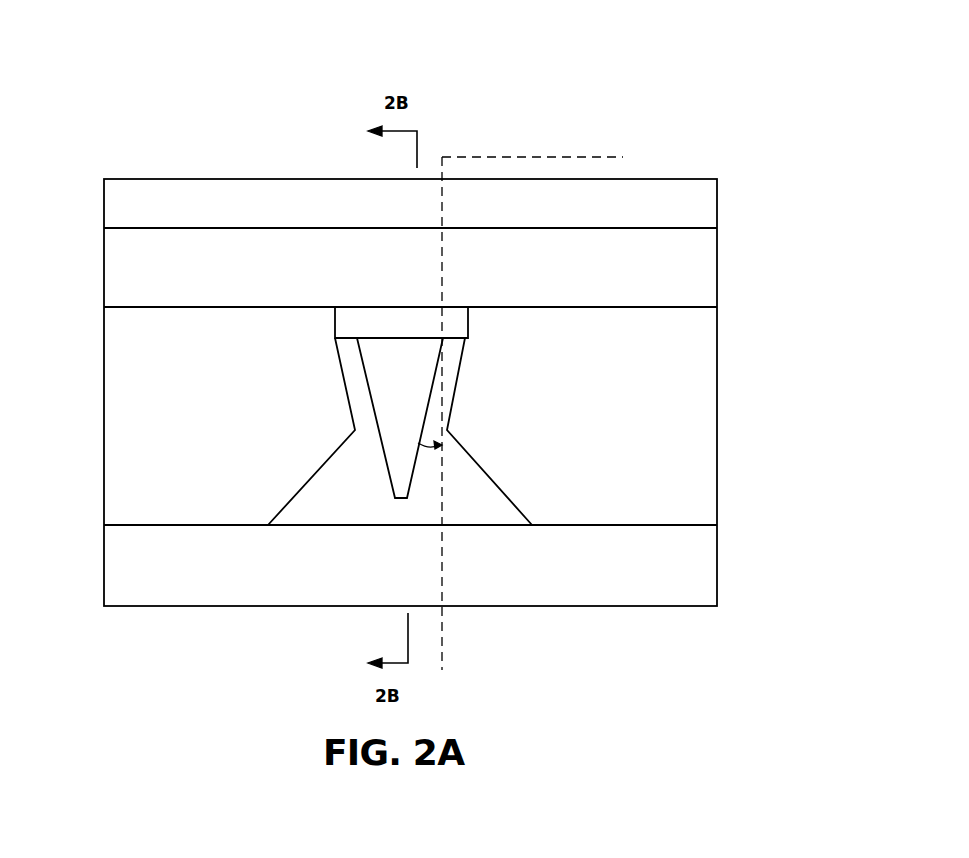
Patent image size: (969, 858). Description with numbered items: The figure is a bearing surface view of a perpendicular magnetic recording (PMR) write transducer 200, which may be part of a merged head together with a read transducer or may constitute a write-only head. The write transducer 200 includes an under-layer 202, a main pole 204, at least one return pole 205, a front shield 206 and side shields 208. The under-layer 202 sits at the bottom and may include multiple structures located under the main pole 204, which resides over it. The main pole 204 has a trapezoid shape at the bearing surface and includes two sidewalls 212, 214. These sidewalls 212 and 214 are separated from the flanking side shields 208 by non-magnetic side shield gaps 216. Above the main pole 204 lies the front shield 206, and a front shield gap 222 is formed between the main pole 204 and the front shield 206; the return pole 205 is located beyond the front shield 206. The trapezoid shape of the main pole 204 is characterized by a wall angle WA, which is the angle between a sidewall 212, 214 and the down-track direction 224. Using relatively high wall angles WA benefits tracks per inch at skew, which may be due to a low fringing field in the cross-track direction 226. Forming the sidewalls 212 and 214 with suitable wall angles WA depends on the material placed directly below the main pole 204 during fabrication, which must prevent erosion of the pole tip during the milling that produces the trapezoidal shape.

The perpendicular magnetic recording transducer 200 is at (95, 171).
The under-layer 202 is at (642, 578).
The main pole 204 is at (408, 353).
The return pole 205 is at (642, 208).
The front shield 206 is at (642, 279).
The side shields 208 is at (623, 405).
The sidewall 212 is at (368, 405).
The sidewall 214 is at (445, 410).
The side shield gaps 216 is at (353, 375).
The front shield gap 222 is at (438, 323).
The down-track direction 224 is at (442, 492).
The cross-track direction 226 is at (512, 157).
The wall angle WA is at (429, 460).